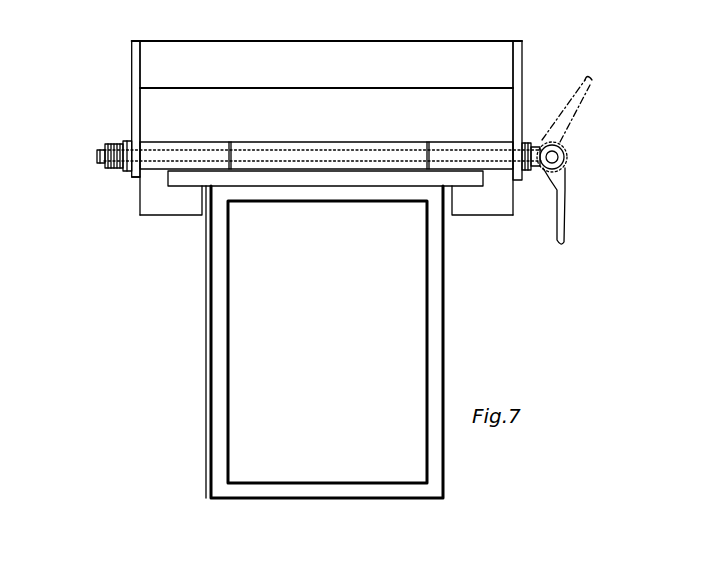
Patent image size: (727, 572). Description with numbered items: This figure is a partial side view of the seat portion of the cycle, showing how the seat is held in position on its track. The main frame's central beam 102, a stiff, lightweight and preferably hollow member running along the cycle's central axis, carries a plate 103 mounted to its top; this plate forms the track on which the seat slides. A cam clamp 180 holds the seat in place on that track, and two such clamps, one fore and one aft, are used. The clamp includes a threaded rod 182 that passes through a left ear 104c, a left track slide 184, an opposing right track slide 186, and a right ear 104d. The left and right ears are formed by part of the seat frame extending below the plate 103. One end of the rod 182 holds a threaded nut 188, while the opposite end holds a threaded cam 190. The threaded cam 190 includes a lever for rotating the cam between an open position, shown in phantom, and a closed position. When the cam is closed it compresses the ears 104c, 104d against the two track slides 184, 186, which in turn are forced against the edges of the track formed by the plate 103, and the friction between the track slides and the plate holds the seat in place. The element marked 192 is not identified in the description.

The central beam 102 is at (444, 305).
The plate 103 is at (208, 188).
The left ear 104c is at (523, 110).
The right ear 104d is at (131, 115).
The cam clamp 180 is at (575, 180).
The threaded rod 182 is at (448, 152).
The left track slide 184 is at (470, 215).
The right track slide 186 is at (167, 210).
The threaded nut 188 is at (107, 168).
The threaded cam 190 is at (580, 98).
The rod 192 is at (300, 140).